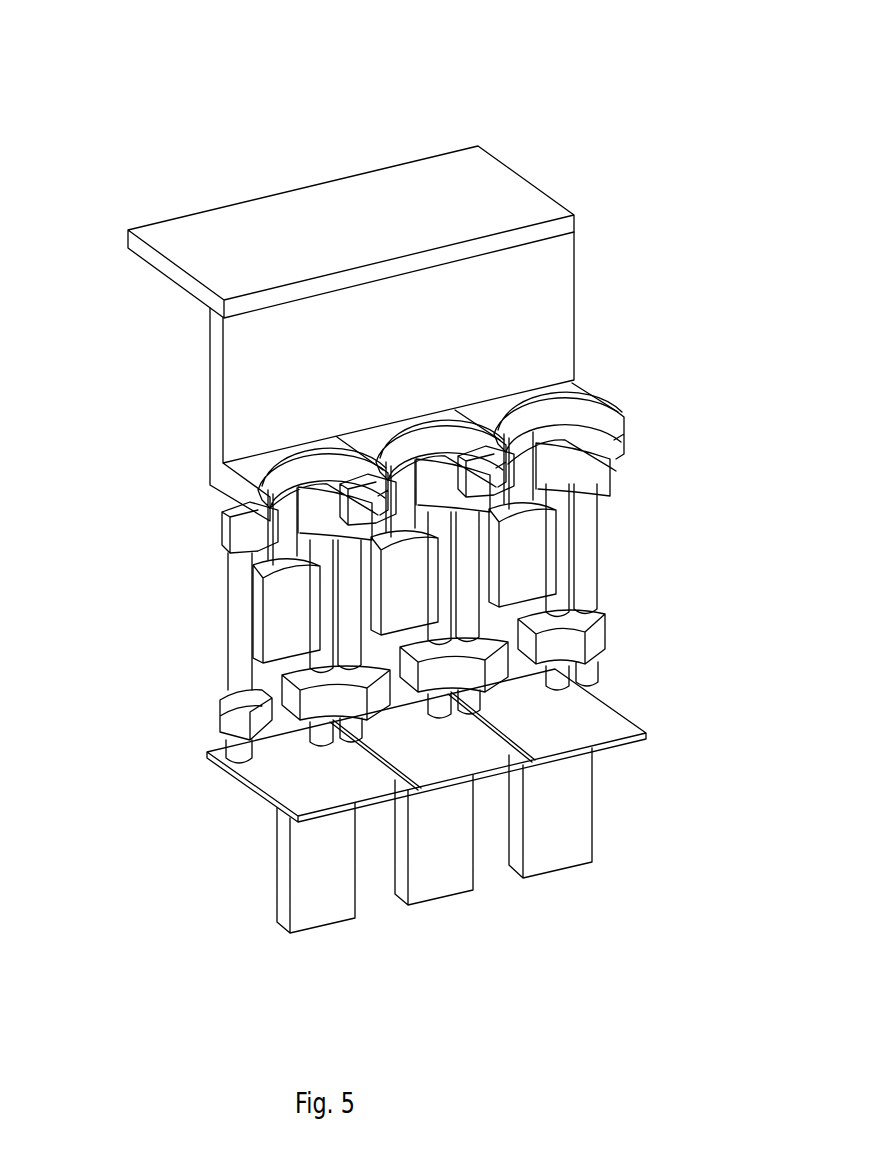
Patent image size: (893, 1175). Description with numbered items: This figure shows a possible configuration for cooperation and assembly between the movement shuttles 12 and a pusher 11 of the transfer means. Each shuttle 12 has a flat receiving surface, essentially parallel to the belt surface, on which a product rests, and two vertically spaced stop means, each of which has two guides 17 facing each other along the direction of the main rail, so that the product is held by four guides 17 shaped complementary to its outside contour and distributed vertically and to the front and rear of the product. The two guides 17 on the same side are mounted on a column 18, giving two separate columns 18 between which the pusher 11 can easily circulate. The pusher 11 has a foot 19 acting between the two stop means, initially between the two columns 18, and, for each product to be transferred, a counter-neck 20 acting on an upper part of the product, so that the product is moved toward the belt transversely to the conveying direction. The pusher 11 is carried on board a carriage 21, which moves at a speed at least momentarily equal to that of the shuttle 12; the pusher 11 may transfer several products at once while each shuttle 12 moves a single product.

The carriage 21 is at (474, 172).
The pusher 11 is at (542, 273).
The counter-neck 20 is at (588, 405).
The foot 19 is at (530, 543).
The column 18 is at (562, 590).
The guide 17 is at (231, 728).
The shuttle 12 is at (196, 831).